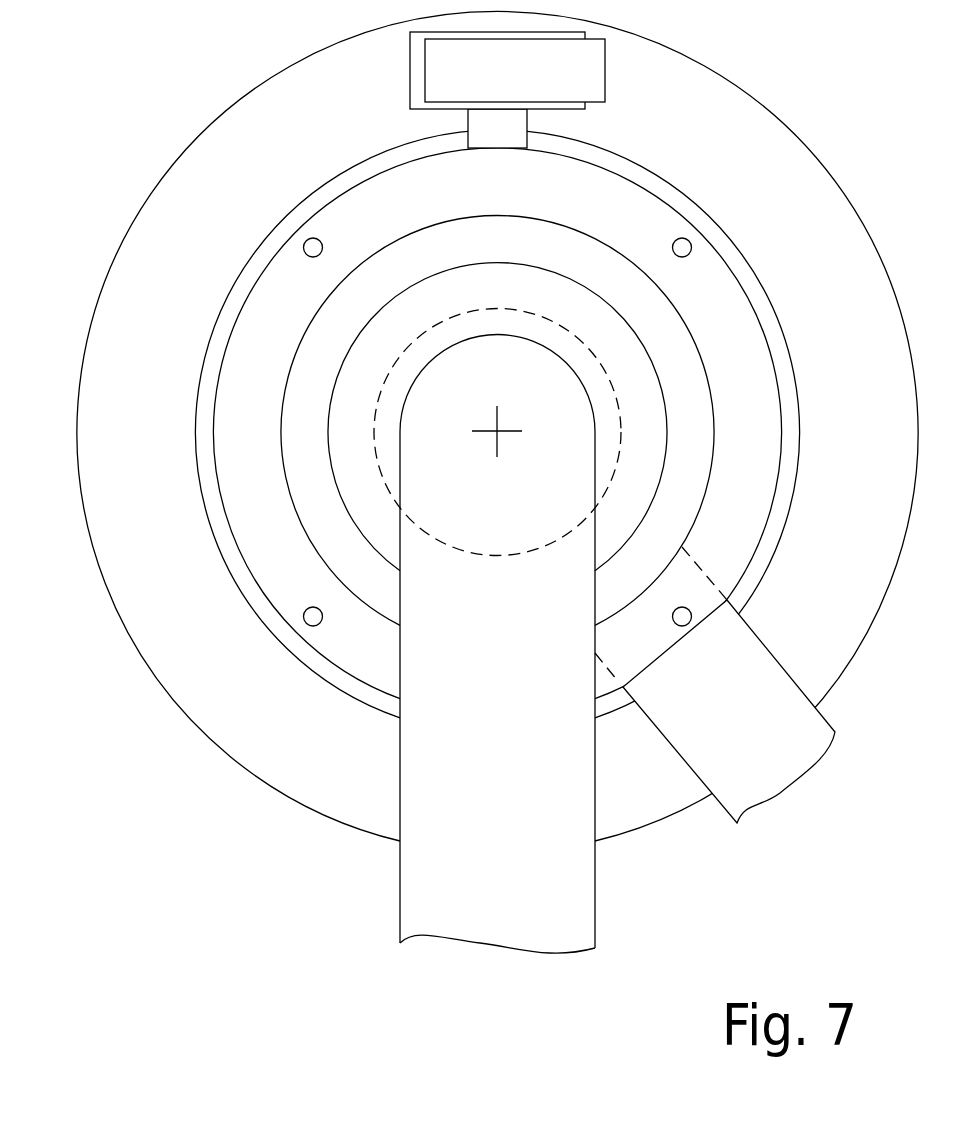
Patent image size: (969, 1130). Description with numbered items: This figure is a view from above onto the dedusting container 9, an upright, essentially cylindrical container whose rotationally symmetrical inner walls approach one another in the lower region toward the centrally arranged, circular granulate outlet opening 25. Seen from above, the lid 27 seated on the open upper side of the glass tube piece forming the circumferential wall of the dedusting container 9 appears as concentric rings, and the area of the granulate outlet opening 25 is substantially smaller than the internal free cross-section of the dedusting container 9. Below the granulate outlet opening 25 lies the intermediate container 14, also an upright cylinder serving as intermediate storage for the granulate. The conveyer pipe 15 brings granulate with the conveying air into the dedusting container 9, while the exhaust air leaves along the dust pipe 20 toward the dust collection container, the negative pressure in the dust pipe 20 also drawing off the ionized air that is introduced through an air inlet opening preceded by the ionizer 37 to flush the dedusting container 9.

The dedusting container 9 is at (239, 124).
The intermediate container 14 is at (770, 108).
The conveyer pipe 15 is at (715, 685).
The dust pipe 20 is at (497, 644).
The granulate outlet opening 25 is at (390, 370).
The lid 27 is at (733, 338).
The ionizer 37 is at (507, 90).